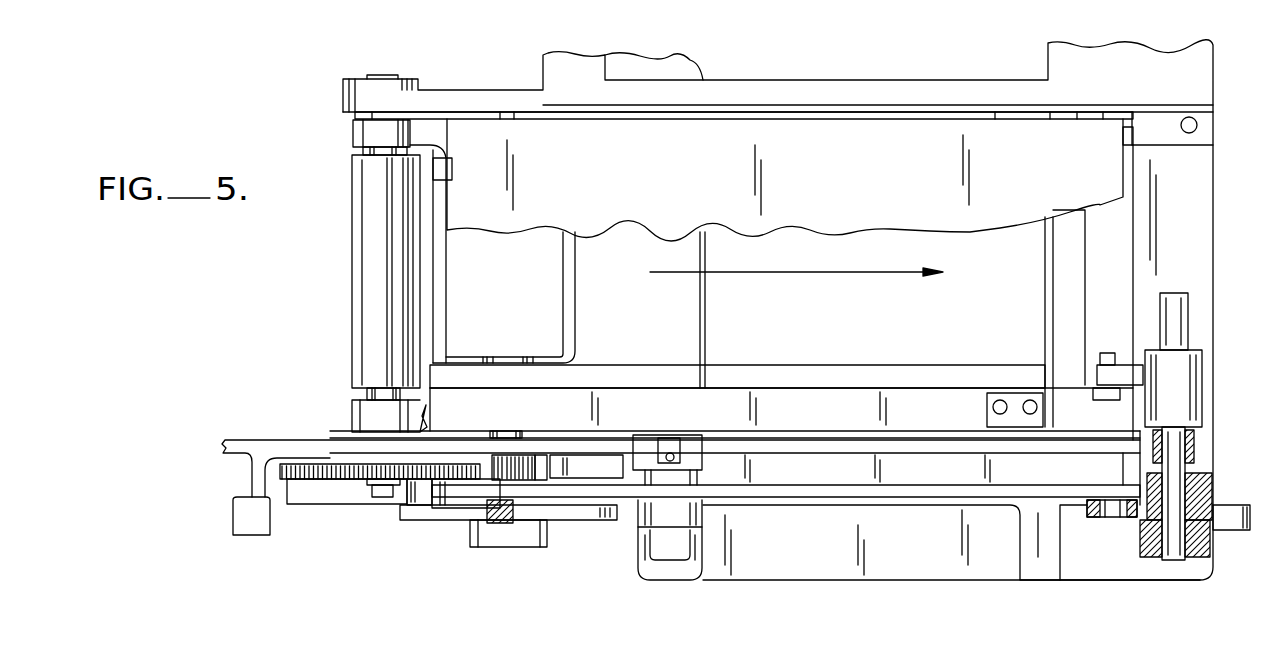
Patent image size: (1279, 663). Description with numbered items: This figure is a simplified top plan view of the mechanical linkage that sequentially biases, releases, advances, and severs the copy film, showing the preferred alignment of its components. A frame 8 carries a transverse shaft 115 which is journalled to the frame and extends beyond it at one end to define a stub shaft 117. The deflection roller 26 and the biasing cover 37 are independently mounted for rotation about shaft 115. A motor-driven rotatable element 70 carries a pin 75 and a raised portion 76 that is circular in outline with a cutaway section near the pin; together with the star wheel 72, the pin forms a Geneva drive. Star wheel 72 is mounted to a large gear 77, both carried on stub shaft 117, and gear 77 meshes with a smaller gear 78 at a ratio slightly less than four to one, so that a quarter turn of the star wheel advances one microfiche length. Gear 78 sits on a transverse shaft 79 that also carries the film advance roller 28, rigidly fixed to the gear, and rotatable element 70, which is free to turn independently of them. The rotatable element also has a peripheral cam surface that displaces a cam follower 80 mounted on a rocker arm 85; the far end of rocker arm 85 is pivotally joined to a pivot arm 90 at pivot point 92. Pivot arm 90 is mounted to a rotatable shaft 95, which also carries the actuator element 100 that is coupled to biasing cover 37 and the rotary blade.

The frame 8 is at (428, 102).
The biasing cover 37 is at (353, 134).
The transverse shaft 115 is at (380, 153).
The deflection roller 26 is at (370, 217).
The advance roller 28 is at (465, 290).
The shaft 79 is at (505, 431).
The gear 78 is at (530, 460).
The large gear 77 is at (303, 482).
The star wheel 72 is at (330, 495).
The stub shaft 117 is at (381, 497).
The pin 75 is at (417, 498).
The rotatable element 70 is at (455, 497).
The raised portion 76 is at (463, 500).
The cam follower 80 is at (502, 513).
The rocker arm 85 is at (830, 492).
The actuator element 100 is at (1187, 370).
The pivot point 92 is at (1118, 510).
The pivot arm 90 is at (1153, 512).
The shaft 95 is at (1208, 547).